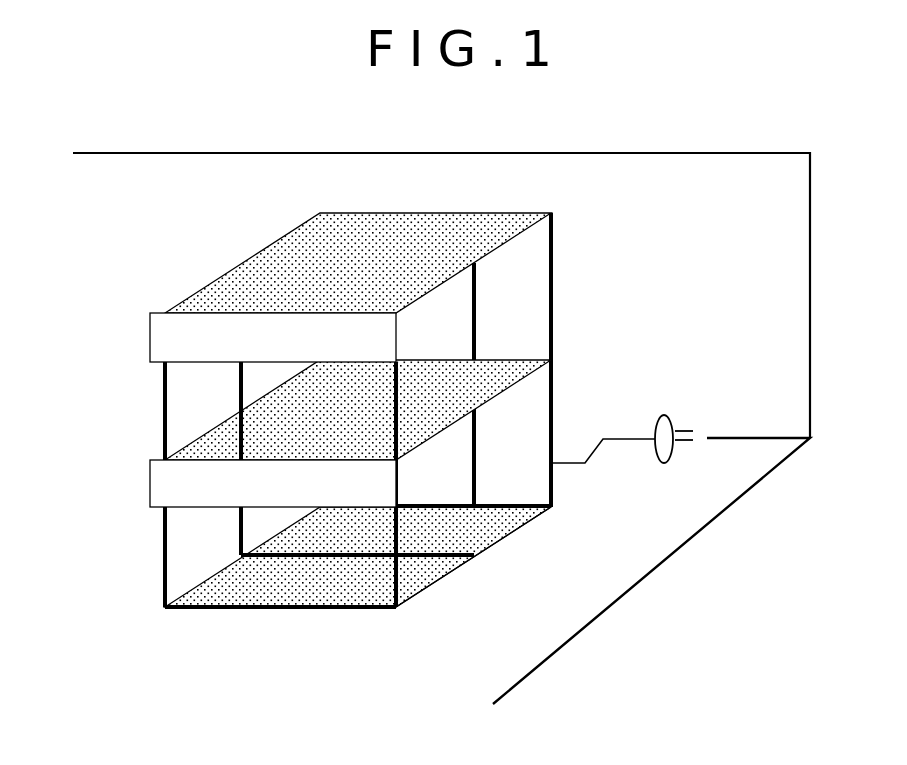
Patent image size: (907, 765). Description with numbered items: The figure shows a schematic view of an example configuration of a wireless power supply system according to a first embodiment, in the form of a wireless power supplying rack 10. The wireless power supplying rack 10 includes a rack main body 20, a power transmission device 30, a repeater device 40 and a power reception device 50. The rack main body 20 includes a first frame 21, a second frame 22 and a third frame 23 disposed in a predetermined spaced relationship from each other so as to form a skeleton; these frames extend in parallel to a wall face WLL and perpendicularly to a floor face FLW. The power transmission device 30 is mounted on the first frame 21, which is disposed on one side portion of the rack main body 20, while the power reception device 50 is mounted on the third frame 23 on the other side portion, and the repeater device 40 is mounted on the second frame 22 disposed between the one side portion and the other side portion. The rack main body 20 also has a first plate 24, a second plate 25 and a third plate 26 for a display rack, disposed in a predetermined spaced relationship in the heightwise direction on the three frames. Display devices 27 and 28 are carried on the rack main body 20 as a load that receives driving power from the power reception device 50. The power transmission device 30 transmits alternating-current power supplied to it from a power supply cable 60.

The wireless power supplying rack 10 is at (377, 450).
The rack main body 20 is at (377, 436).
The first frame 21 is at (551, 266).
The second frame 22 is at (474, 315).
The third frame 23 is at (365, 612).
The first plate 24 is at (418, 220).
The second plate 25 is at (217, 432).
The third plate 26 is at (235, 590).
The display device 27 is at (157, 313).
The display device 28 is at (150, 460).
The power transmission device 30 is at (563, 513).
The repeater device 40 is at (486, 562).
The power reception device 50 is at (408, 614).
The power supply cable 60 is at (628, 440).
The wall face WLL is at (810, 302).
The floor face FLW is at (542, 647).